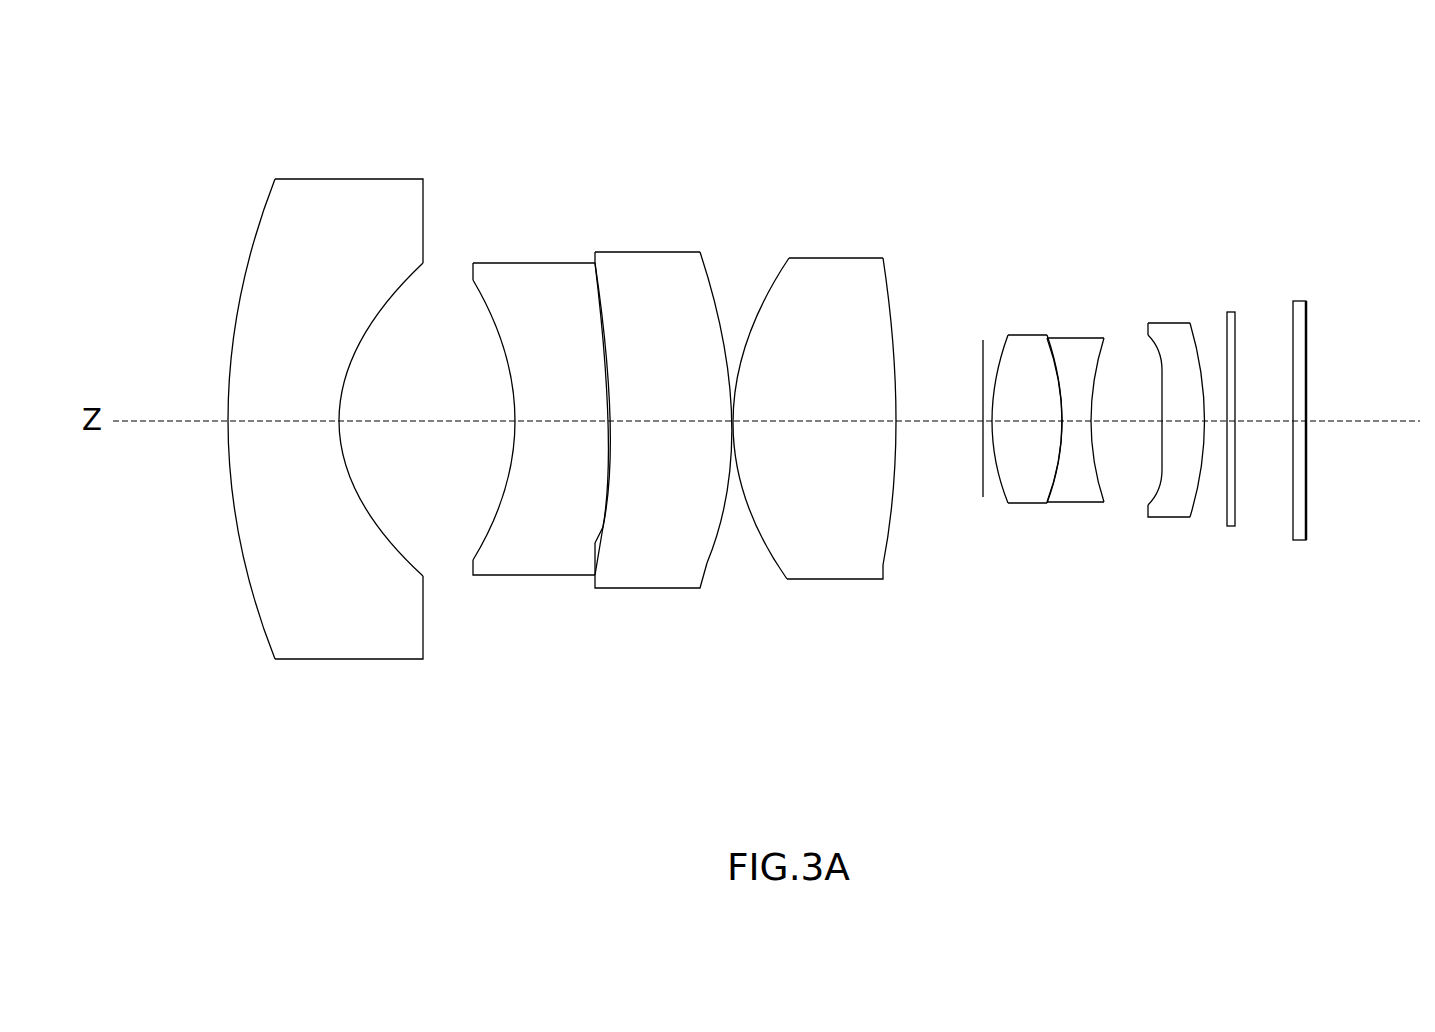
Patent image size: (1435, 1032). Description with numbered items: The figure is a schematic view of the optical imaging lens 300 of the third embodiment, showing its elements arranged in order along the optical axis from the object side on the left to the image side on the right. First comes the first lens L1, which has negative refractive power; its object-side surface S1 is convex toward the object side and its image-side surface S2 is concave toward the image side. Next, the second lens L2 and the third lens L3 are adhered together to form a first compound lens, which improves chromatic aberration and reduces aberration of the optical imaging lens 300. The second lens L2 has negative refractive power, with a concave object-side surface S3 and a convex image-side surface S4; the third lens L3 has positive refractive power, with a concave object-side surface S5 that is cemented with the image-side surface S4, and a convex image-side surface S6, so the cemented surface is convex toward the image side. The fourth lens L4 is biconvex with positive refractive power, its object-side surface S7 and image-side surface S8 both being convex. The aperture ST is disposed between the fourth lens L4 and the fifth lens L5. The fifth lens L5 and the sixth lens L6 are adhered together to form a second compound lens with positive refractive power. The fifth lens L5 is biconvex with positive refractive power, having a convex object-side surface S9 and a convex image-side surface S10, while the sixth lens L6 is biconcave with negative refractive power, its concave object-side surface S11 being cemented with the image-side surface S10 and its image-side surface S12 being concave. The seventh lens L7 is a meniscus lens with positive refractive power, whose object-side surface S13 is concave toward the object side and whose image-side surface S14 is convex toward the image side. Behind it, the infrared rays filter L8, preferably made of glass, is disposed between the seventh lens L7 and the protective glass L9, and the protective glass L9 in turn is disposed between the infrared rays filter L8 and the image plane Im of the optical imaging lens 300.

The optical imaging lens 300 is at (222, 146).
The first lens L1 is at (333, 202).
The second lens L2 is at (561, 277).
The third lens L3 is at (632, 263).
The fourth lens L4 is at (830, 285).
The fifth lens L5 is at (1032, 348).
The sixth lens L6 is at (1080, 348).
The seventh lens L7 is at (1167, 348).
The infrared rays filter L8 is at (1231, 324).
The protective glass L9 is at (1299, 311).
The aperture ST is at (983, 345).
The image plane Im is at (1309, 334).
The object-side surface of the first lens S1 is at (265, 635).
The image-side surface of the first lens S2 is at (423, 632).
The object-side surface of the second lens S3 is at (482, 542).
The image-side surface of the second lens S4 is at (599, 543).
The object-side surface of the third lens S5 is at (603, 527).
The image-side surface of the third lens S6 is at (707, 565).
The object-side surface of the fourth lens S7 is at (787, 579).
The image-side surface of the fourth lens S8 is at (883, 567).
The object-side surface of the fifth lens S9 is at (1005, 492).
The image-side surface of the fifth lens S10 is at (1050, 483).
The object-side surface of the sixth lens S11 is at (1058, 467).
The image-side surface of the sixth lens S12 is at (1103, 485).
The object-side surface of the seventh lens S13 is at (1158, 492).
The image-side surface of the seventh lens S14 is at (1196, 496).